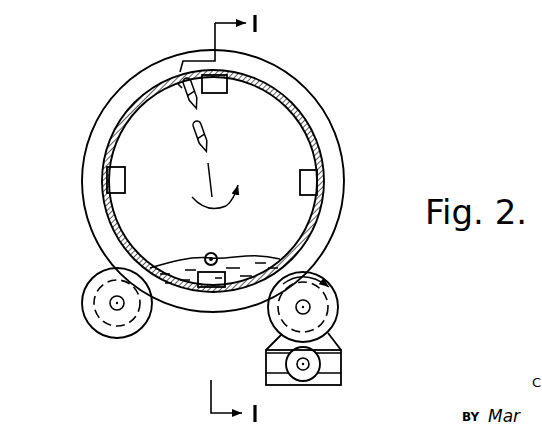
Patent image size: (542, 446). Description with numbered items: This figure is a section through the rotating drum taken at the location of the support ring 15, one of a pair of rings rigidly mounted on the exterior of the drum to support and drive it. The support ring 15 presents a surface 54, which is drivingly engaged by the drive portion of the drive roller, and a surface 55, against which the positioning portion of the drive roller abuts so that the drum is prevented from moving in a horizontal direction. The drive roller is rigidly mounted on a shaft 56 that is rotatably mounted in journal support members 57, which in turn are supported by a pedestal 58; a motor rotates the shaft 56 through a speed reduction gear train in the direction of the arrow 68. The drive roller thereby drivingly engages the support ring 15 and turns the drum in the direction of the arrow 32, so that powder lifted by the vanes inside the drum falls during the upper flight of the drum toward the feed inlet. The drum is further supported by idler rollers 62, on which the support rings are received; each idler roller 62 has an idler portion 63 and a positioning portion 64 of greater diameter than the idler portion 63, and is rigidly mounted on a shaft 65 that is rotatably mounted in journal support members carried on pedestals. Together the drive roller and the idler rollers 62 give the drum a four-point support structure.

The support ring 15 is at (235, 181).
The surface of support ring 54 is at (320, 91).
The surface of support ring 55 is at (333, 180).
The arrow 32 is at (226, 206).
The idler roller 62 is at (92, 302).
The idler portion 63 is at (93, 294).
The positioning portion 64 is at (83, 311).
The shaft 65 is at (113, 311).
The arrow 68 is at (324, 280).
The shaft 56 is at (310, 307).
The journal support member 57 is at (332, 343).
The pedestal 58 is at (335, 365).